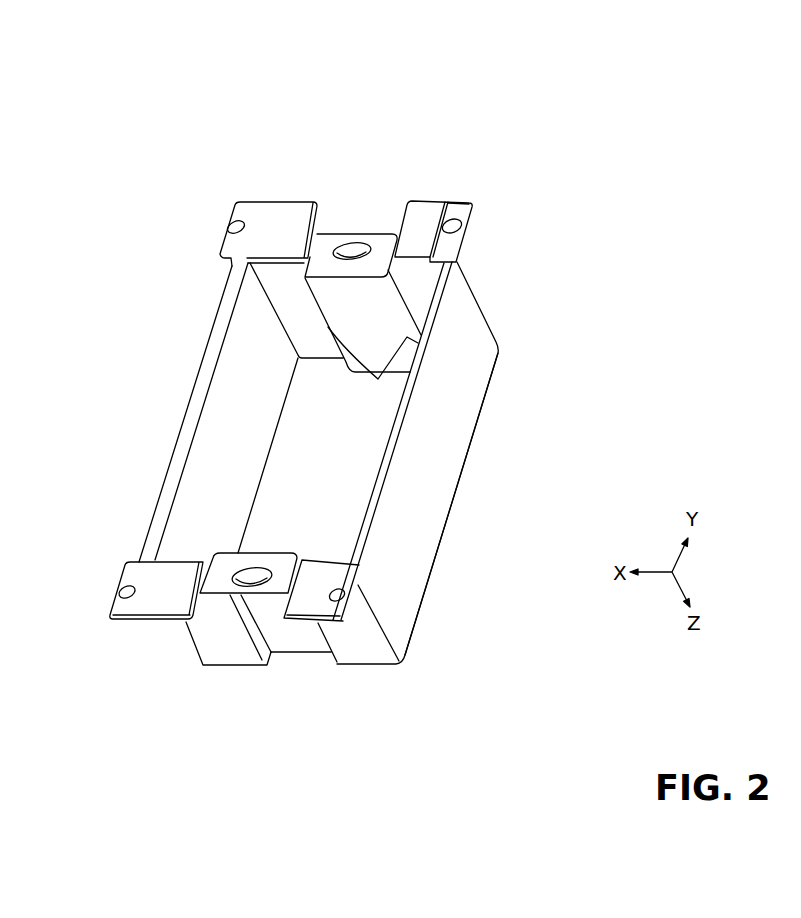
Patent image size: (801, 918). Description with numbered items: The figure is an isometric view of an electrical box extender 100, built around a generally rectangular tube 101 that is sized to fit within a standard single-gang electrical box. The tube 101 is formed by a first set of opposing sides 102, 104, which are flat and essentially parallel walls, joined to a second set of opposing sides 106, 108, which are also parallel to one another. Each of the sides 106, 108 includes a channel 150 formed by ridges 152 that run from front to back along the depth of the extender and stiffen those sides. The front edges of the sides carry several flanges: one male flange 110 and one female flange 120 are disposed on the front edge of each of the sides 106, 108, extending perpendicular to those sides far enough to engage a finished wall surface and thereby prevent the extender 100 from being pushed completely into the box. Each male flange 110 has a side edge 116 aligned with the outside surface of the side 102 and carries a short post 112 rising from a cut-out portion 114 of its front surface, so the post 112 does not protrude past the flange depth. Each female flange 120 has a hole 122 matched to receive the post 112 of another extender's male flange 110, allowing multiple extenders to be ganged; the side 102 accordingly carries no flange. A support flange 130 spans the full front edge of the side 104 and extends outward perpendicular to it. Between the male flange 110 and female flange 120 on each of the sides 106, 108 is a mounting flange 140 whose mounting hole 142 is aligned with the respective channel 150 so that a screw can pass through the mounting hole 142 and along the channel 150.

The electrical box extender 100 is at (66, 86).
The rectangular tube 101 is at (507, 338).
The side 102 is at (450, 467).
The side 104 is at (259, 450).
The side 106 is at (328, 338).
The side 108 is at (368, 656).
The male flange 110 is at (404, 383).
The post 112 is at (463, 227).
The portion 114 is at (455, 251).
The side edge 116 is at (473, 204).
The female flange 120 is at (185, 399).
The hole 122 is at (229, 232).
The support flange 130 is at (178, 407).
The mounting flange 140 is at (298, 407).
The mounting hole 142 is at (356, 242).
The channel 150 is at (304, 672).
The ridge 152 is at (378, 381).